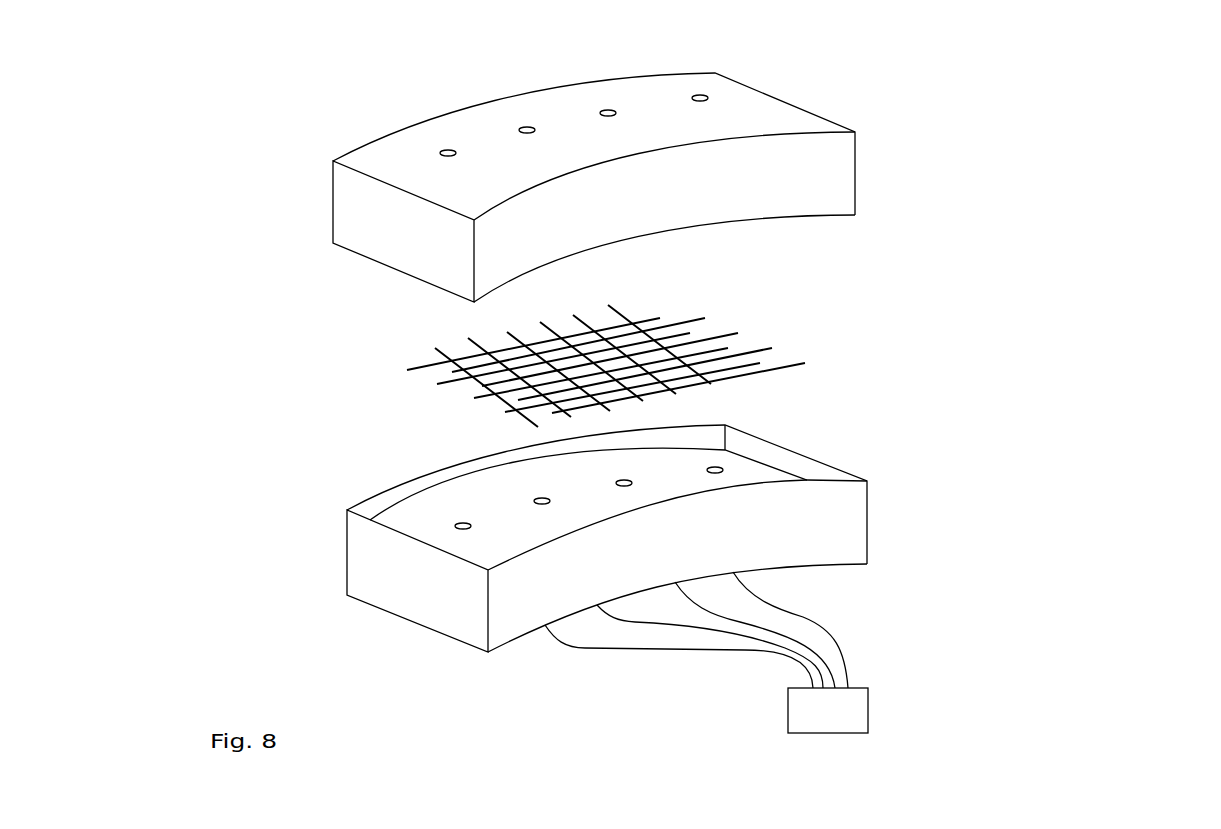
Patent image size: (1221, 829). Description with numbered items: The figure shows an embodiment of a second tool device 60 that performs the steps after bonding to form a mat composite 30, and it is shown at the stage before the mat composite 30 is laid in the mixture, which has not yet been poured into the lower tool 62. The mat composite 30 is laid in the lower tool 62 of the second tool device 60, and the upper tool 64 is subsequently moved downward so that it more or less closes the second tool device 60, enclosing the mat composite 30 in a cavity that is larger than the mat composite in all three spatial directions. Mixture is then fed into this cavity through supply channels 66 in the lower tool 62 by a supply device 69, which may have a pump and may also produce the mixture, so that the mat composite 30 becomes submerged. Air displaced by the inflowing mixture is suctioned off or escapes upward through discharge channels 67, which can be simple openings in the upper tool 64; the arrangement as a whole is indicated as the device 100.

The mat composite 30 is at (778, 318).
The second tool device 60 is at (988, 233).
The lower tool 62 is at (842, 533).
The upper tool 64 is at (830, 160).
The supply channels 66 is at (618, 481).
The discharge channels 67 is at (700, 95).
The supply device 69 is at (860, 713).
The device 100 is at (1060, 676).